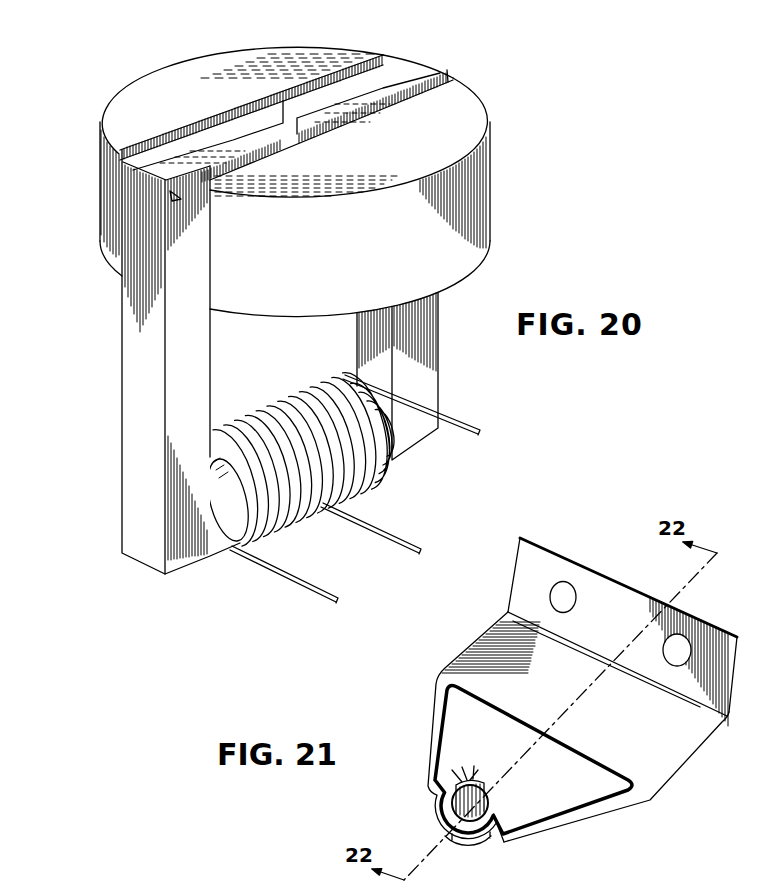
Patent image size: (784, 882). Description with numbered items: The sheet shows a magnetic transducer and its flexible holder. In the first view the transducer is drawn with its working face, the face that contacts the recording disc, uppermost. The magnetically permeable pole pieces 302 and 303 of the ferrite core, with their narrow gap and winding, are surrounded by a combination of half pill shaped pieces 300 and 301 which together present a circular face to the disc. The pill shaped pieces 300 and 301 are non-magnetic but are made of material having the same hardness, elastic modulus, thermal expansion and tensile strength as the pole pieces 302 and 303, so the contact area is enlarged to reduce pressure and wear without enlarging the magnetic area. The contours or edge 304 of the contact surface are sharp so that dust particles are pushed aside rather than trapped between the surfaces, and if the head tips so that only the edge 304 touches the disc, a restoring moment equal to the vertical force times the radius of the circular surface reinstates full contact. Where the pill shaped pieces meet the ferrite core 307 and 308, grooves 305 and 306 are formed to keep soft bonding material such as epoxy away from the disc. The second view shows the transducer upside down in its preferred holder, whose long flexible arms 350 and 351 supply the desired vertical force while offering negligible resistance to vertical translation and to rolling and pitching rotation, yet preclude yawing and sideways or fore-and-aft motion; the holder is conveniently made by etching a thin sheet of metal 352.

In FIG. 20, the half pill shaped piece 300 is at (178, 86).
In FIG. 20, the half pill shaped piece 301 is at (465, 110).
In FIG. 20, the pole piece 302 is at (222, 134).
In FIG. 20, the pole piece 303 is at (403, 70).
In FIG. 20, the edge (contour of surface of contact) 304 is at (200, 56).
In FIG. 20, the groove 305 is at (121, 170).
In FIG. 20, the groove 306 is at (172, 193).
In FIG. 20, the ferrite core 307 is at (125, 212).
In FIG. 20, the ferrite core 308 is at (165, 248).
In FIG. 21, the arm 350 is at (437, 723).
In FIG. 21, the arm 351 is at (606, 800).
In FIG. 21, the thin sheet of metal 352 is at (680, 746).